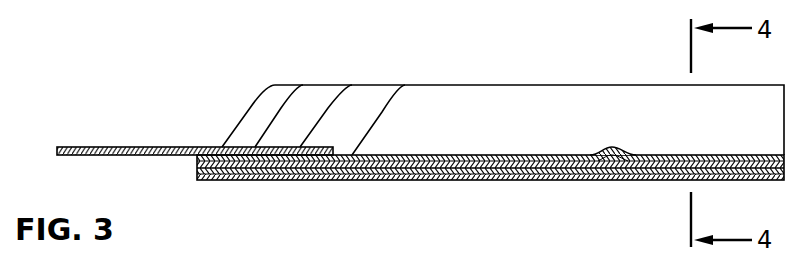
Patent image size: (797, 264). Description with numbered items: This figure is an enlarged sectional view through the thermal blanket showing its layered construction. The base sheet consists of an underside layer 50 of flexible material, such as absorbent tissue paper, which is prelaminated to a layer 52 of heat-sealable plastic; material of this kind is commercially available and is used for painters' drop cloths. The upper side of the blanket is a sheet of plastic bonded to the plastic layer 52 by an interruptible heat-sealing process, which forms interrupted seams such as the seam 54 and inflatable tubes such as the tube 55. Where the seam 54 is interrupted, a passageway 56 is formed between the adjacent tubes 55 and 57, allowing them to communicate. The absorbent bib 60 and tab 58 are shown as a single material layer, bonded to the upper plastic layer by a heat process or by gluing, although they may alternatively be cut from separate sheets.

The underside layer 50 is at (314, 181).
The layer of heat-sealable plastic 52 is at (530, 172).
The interrupted seam 54 is at (470, 154).
The inflatable tube 55 is at (424, 97).
The passageway 56 is at (614, 163).
The inflatable tube 57 is at (366, 97).
The tab 58 is at (238, 146).
The bib 60 is at (113, 146).